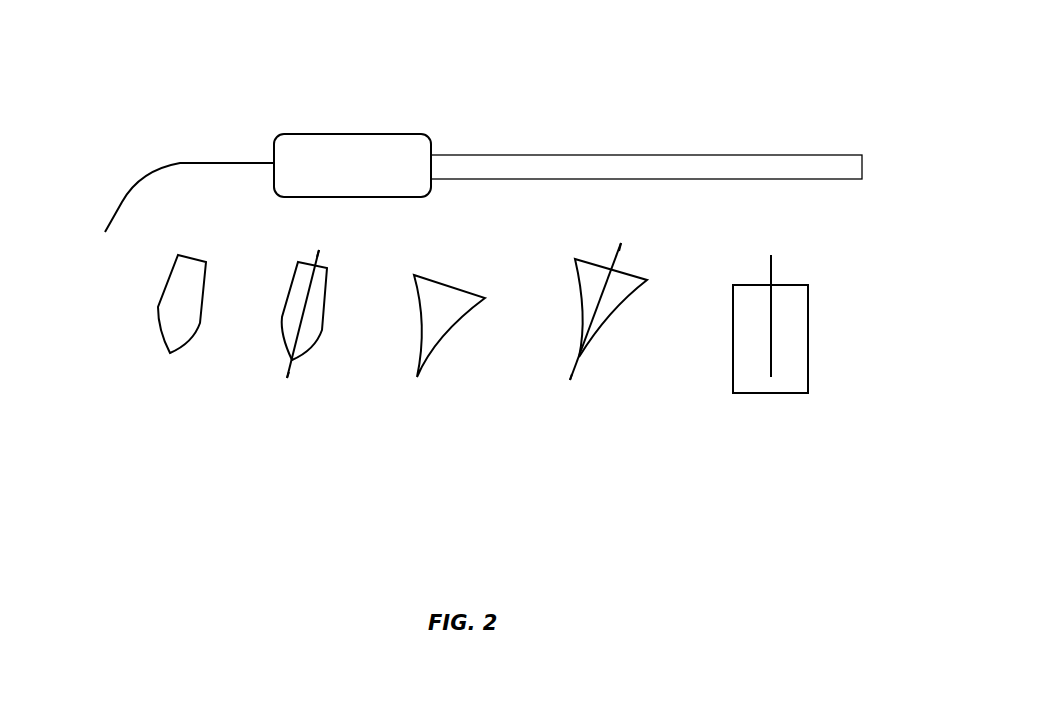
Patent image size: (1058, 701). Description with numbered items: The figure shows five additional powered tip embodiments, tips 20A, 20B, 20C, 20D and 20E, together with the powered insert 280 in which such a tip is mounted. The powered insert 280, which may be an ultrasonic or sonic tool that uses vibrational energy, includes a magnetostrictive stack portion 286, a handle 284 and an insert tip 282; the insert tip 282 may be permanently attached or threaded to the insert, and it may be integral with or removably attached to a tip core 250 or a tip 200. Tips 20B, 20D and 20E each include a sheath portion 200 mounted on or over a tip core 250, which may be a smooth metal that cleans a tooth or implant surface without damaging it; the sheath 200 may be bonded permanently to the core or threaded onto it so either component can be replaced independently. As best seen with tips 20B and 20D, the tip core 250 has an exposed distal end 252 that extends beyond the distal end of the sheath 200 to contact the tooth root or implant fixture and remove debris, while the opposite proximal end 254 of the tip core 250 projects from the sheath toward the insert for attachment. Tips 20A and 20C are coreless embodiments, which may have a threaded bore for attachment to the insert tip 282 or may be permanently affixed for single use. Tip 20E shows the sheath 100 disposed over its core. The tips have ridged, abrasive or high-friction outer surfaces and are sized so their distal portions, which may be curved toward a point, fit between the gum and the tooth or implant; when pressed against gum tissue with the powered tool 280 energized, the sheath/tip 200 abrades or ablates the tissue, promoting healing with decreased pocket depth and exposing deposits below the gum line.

The powered insert 280 is at (457, 129).
The insert tip 282 is at (123, 200).
The handle 284 is at (335, 158).
The magnetostrictive stack portion 286 is at (520, 167).
The sheath portion 200 is at (172, 310).
The tip core 250 is at (300, 317).
The exposed distal end 252 is at (290, 373).
The proximal end 254 is at (617, 252).
The sheath 100 is at (790, 365).
The tip 20A is at (160, 375).
The tip 20B is at (272, 275).
The tip 20C is at (448, 413).
The tip 20D is at (617, 413).
The tip 20E is at (803, 430).